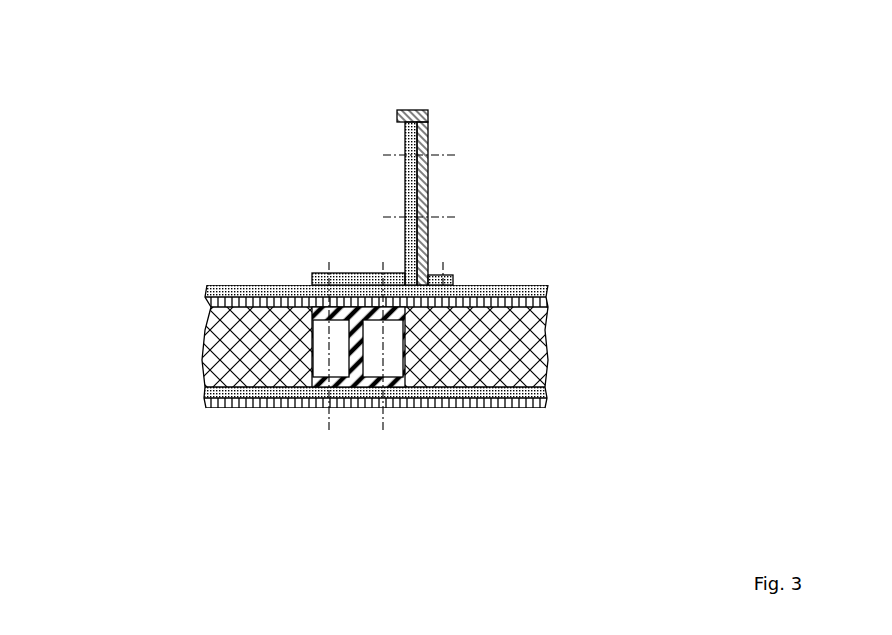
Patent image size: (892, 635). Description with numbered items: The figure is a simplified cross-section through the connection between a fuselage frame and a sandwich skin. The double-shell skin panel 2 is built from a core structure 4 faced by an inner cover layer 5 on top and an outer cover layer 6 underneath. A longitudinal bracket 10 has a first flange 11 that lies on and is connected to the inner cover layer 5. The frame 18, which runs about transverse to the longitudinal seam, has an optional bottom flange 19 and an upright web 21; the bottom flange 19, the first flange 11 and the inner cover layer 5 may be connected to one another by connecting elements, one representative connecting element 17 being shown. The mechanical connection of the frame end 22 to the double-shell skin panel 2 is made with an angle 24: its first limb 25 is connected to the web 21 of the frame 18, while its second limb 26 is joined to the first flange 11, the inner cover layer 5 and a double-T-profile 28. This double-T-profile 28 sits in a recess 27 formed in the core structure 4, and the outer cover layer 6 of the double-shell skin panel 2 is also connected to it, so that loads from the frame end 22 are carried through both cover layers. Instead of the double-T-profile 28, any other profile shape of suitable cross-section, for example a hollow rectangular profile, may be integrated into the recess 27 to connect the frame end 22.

The double-shell skin panel 2 is at (190, 354).
The core structure 4 is at (253, 353).
The inner cover layer 5 is at (210, 302).
The outer cover layer 6 is at (196, 385).
The longitudinal bracket 10 is at (217, 262).
The first flange 11 is at (240, 287).
The connecting element 17 is at (455, 217).
The frame 18 is at (449, 92).
The bottom flange 19 is at (453, 276).
The web 21 is at (423, 170).
The frame end 22 is at (522, 170).
The angle 24 is at (358, 180).
The first limb 25 is at (405, 139).
The second limb 26 is at (320, 272).
The recess 27 is at (392, 366).
The double-T-profile 28 is at (360, 387).